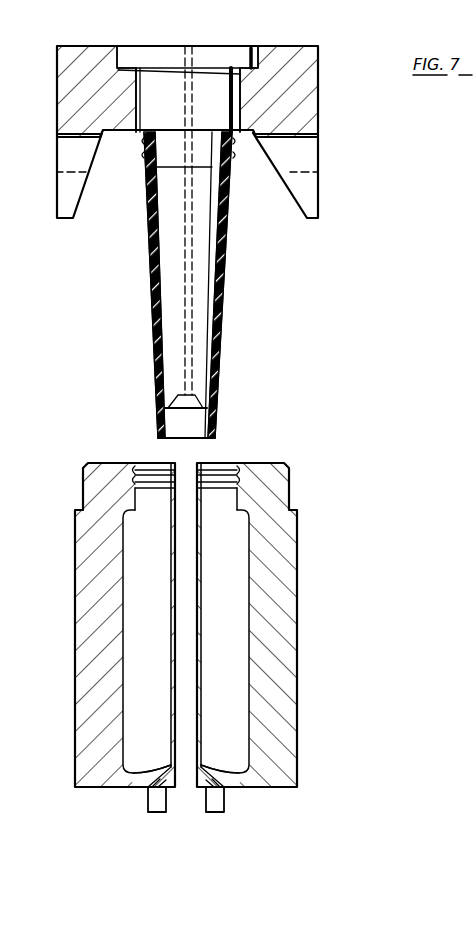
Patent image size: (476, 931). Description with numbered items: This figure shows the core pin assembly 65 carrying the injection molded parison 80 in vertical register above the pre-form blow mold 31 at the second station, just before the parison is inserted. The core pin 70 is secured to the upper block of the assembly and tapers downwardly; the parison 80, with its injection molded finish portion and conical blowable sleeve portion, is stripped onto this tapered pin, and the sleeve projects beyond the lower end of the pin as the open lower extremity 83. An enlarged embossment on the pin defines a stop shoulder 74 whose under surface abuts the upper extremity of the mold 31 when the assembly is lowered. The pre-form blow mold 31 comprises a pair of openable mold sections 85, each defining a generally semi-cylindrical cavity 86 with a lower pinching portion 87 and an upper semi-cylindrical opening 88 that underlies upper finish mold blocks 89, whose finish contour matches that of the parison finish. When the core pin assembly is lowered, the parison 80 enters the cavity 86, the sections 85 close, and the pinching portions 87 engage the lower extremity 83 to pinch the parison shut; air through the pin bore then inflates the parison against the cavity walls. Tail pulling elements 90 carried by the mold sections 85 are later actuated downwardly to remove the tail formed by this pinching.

The pre-form blow mold 31 is at (189, 641).
The core pin assembly 65 is at (325, 120).
The core pin 70 is at (170, 305).
The stop shoulder 74 is at (255, 136).
The parison 80 is at (221, 317).
The lower extremity of the parison 83 is at (214, 427).
The pre-form blow mold sections 85 is at (75, 658).
The cavity 86 is at (120, 598).
The pinching portion 87 is at (199, 766).
The upper semi-cylindrical opening 88 is at (138, 498).
The upper finish mold blocks 89 is at (140, 472).
The tail pulling elements 90 is at (210, 810).